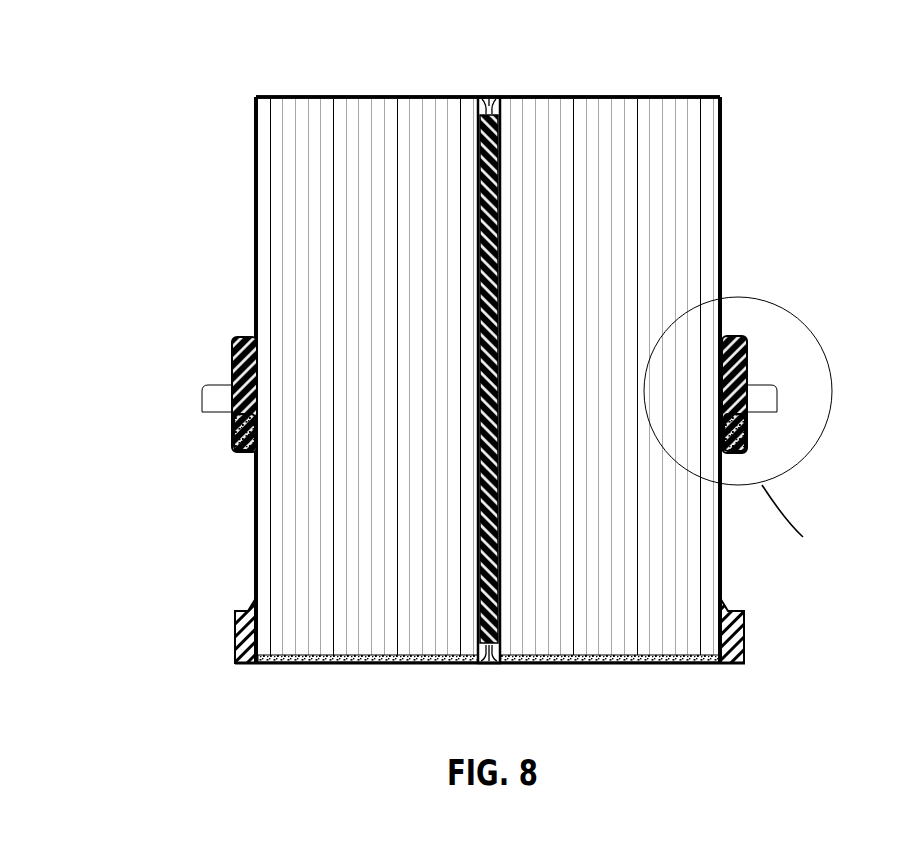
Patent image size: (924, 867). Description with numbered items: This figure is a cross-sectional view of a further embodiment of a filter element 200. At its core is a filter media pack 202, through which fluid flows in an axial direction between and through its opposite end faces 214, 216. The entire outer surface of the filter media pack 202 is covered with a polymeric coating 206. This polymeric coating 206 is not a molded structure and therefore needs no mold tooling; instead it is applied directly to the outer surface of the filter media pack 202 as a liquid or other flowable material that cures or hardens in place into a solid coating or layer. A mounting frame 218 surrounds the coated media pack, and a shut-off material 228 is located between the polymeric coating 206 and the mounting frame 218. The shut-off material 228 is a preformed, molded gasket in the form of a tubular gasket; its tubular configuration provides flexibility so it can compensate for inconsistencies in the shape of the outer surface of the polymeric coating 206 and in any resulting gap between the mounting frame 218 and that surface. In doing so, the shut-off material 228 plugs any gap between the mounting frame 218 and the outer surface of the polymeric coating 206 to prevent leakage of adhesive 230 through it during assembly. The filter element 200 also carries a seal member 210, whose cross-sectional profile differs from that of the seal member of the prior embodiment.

The filter element 200 is at (496, 398).
The filter media pack 202 is at (697, 196).
The polymeric coating 206 is at (722, 244).
The seal member 210 is at (744, 627).
The end face 214 is at (378, 97).
The end face 216 is at (620, 662).
The mounting frame 218 is at (218, 390).
The shut-off material 228 is at (236, 420).
The adhesive 230 is at (243, 340).